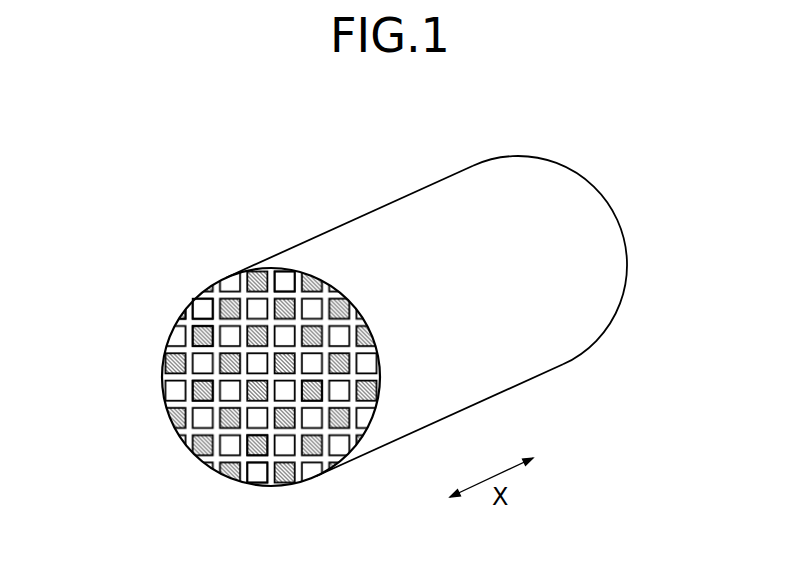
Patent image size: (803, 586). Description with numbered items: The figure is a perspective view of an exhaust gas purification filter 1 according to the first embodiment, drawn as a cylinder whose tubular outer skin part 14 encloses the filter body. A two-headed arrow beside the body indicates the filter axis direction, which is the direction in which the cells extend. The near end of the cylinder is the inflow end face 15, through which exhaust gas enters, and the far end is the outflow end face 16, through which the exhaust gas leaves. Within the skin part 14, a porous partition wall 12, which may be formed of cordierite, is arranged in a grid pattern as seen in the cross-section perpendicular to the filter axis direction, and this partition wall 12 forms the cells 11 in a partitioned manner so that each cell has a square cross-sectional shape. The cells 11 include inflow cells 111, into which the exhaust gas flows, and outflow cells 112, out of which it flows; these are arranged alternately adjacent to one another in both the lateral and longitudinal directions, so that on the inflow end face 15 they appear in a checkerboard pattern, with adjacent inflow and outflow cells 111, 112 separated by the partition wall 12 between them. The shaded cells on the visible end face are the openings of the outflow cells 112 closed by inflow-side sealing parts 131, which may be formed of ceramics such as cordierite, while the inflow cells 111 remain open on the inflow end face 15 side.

The exhaust gas purification filter 1 is at (392, 182).
The cells 11 is at (207, 225).
The inflow cells 111 is at (207, 298).
The outflow cells 112 is at (187, 320).
The partition wall 12 is at (280, 286).
The inflow-side sealing parts 131 is at (307, 400).
The skin part 14 is at (525, 333).
The inflow end face 15 is at (268, 457).
The outflow end face 16 is at (627, 260).